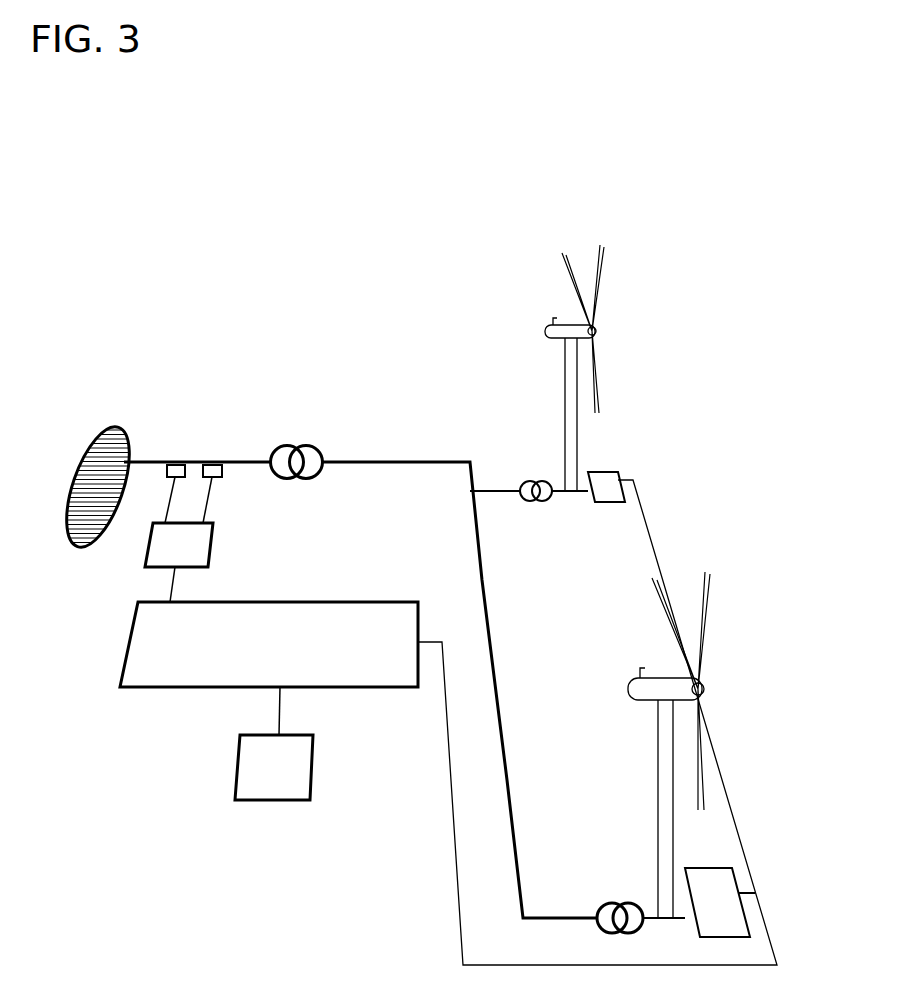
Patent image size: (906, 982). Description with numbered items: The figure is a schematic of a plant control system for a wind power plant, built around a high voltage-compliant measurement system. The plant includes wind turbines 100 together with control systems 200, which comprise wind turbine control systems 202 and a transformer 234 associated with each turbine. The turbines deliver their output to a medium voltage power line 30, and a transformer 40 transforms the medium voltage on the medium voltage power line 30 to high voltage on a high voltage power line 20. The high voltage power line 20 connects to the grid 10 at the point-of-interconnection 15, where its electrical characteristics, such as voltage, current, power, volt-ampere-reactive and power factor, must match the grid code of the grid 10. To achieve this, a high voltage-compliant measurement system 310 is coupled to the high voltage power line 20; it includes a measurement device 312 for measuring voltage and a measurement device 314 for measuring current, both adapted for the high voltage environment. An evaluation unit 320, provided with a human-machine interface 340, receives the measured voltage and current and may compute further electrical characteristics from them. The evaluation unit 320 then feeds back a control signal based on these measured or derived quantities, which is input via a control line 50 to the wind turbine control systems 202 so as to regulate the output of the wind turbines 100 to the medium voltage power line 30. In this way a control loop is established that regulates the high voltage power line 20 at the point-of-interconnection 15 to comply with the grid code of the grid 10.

The grid 10 is at (118, 424).
The point-of-interconnection 15 is at (130, 458).
The high voltage power line 20 is at (238, 460).
The medium voltage power line 30 is at (388, 460).
The transformer 40 is at (309, 446).
The control line 50 is at (455, 878).
The wind turbines 100 is at (546, 298).
The control systems 200 is at (546, 445).
The wind turbine control systems 202 is at (608, 468).
The transformer 234 is at (533, 502).
The high voltage-compliant measurement system 310 is at (145, 552).
The measurement device 312 is at (167, 478).
The measurement device 314 is at (216, 478).
The evaluation unit 320 is at (118, 672).
The human-machine interface 340 is at (268, 802).